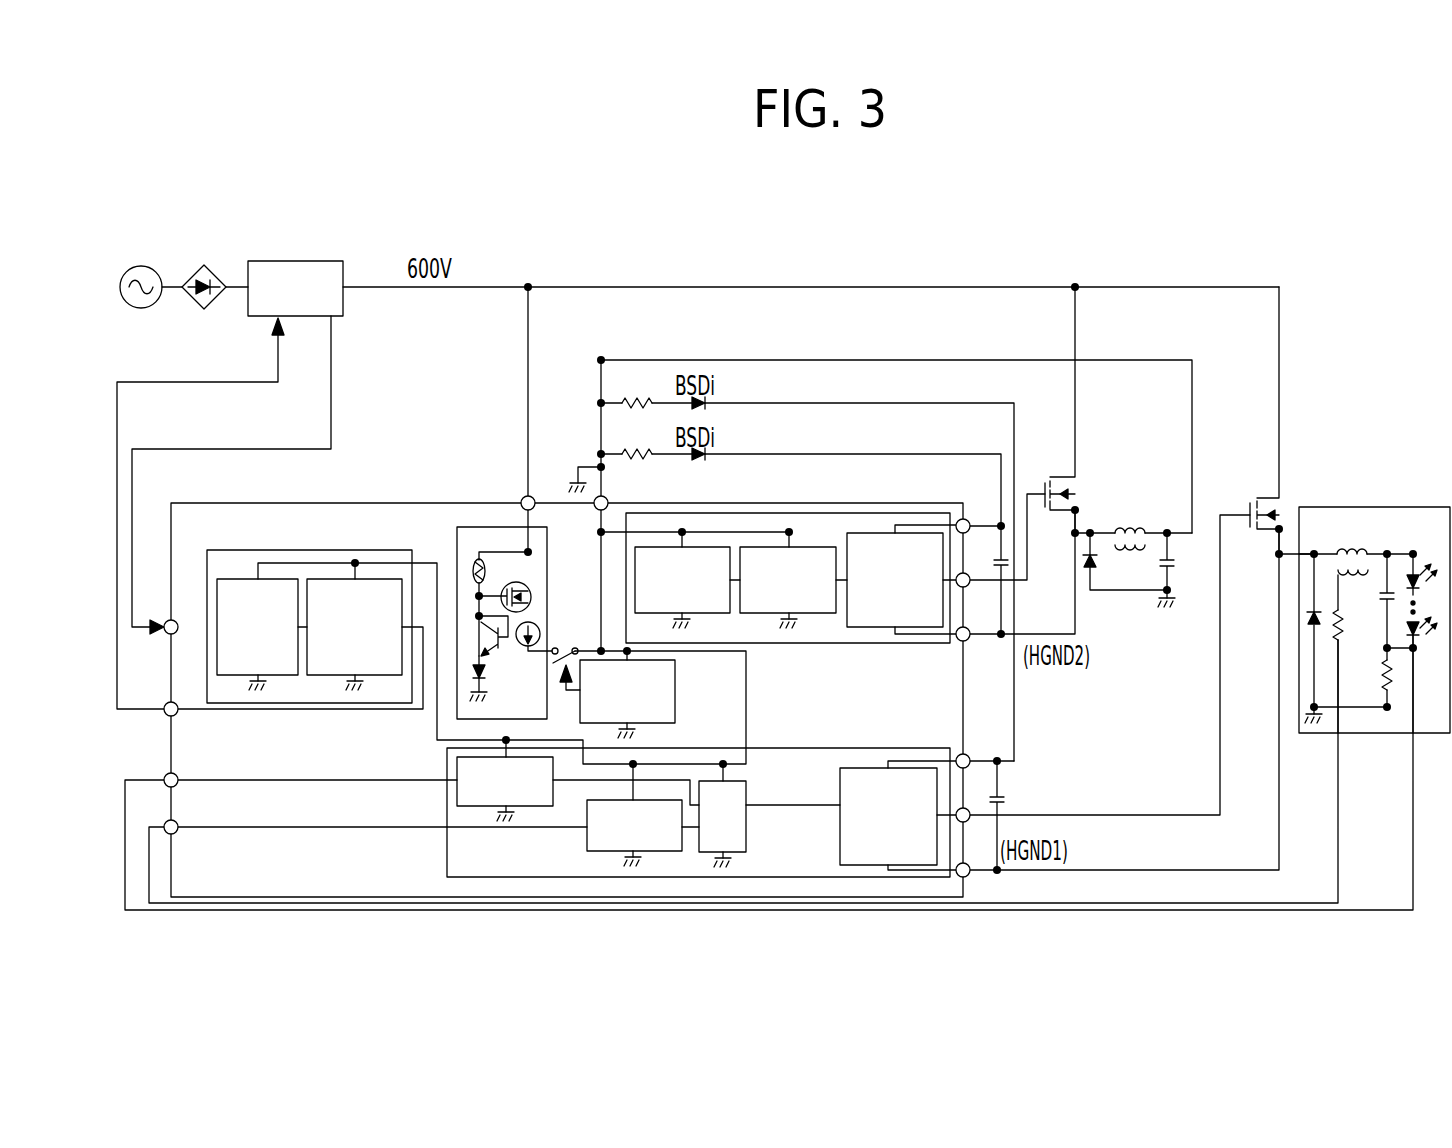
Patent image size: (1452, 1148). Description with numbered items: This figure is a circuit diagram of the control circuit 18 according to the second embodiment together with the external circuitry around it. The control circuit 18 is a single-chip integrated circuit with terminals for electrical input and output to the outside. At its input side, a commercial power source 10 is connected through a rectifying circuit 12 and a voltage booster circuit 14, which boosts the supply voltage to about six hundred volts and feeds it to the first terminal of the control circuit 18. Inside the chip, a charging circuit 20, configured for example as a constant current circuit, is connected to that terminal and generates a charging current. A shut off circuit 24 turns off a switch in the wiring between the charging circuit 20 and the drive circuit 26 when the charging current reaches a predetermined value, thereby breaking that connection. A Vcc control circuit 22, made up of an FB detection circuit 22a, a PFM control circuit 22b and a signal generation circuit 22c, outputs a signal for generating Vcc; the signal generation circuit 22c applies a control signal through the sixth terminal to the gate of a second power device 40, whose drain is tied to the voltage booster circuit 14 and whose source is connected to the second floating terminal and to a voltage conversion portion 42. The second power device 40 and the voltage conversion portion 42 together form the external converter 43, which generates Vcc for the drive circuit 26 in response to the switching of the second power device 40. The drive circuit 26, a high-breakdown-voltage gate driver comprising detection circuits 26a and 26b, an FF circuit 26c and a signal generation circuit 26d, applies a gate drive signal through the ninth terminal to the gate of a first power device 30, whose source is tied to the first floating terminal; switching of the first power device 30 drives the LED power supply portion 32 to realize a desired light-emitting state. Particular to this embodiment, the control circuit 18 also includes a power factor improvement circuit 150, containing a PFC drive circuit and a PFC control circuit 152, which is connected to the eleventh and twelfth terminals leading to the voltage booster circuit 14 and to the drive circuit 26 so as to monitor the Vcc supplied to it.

The commercial power source 10 is at (142, 262).
The rectifying circuit 12 is at (205, 262).
The voltage booster circuit 14 is at (292, 261).
The control circuit 18 is at (170, 653).
The charging circuit 20 is at (457, 540).
The Vcc control circuit 22 is at (758, 513).
The FB detection circuit 22a is at (712, 547).
The PFM control circuit 22b is at (808, 547).
The signal generation circuit 22c is at (873, 533).
The shut off circuit 24 is at (675, 720).
The drive circuit 26 is at (825, 749).
The detection circuit 26a is at (457, 765).
The detection circuit 26b is at (587, 842).
The FF circuit 26c is at (746, 840).
The signal generation circuit 26d is at (840, 780).
The first power device 30 is at (1257, 498).
The LED power supply portion 32 is at (1369, 507).
The second power device 40 is at (1083, 483).
The voltage conversion portion 42 is at (1127, 518).
The external converter 43 is at (1144, 471).
The power factor improvement circuit 150 is at (271, 703).
The PFC control circuit 152 is at (230, 579).